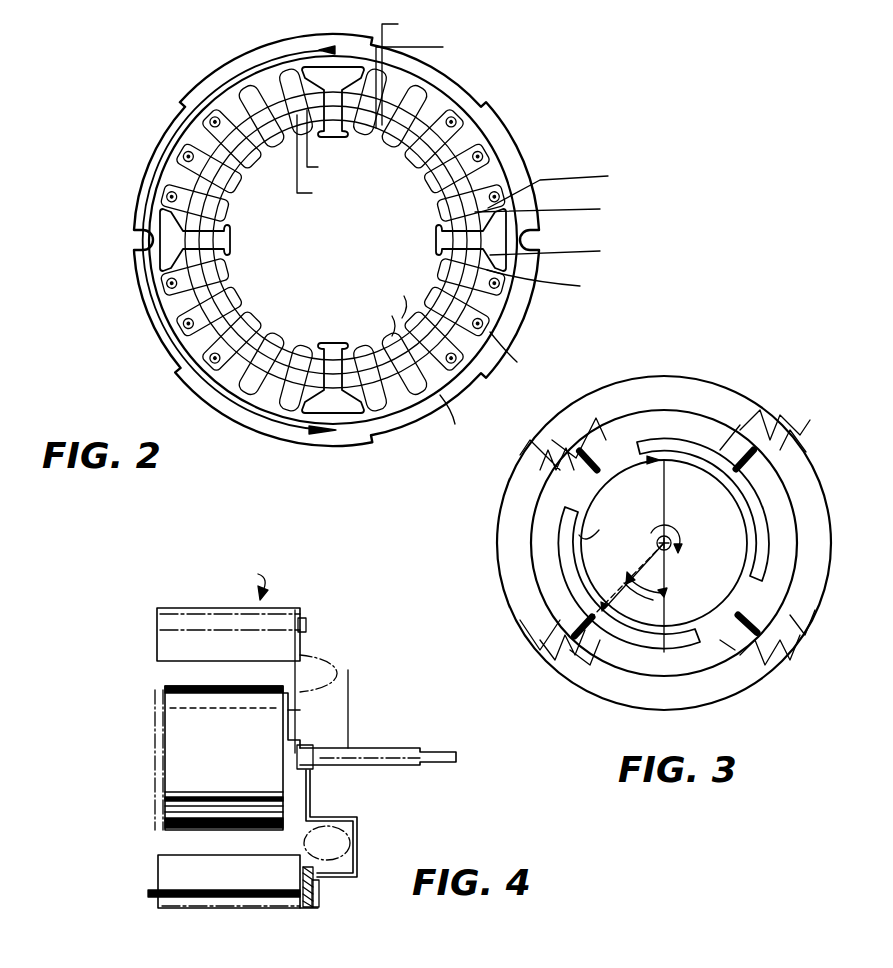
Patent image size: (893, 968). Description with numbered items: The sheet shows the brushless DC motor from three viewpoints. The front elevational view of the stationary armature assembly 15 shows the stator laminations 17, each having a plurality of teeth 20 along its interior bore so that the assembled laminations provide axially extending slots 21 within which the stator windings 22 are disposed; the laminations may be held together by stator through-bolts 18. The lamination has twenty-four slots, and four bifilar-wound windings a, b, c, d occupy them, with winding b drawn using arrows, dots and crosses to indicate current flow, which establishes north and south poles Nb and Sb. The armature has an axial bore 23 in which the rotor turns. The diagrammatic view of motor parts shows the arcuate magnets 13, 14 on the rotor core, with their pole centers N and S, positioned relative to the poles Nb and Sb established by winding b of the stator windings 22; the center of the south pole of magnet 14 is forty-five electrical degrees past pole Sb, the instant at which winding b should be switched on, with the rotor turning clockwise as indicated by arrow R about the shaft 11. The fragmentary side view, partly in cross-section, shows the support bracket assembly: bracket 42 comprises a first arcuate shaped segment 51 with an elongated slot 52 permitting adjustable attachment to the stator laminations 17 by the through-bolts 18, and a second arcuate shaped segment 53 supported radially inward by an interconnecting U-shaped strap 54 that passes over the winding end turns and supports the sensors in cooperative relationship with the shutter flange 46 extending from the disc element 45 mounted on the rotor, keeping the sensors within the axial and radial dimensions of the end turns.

In FIG. 3, the shaft 11 is at (657, 552).
In FIG. 4, the shaft 11 is at (402, 746).
In FIG. 3, the arcuate magnet 13 is at (750, 492).
In FIG. 4, the arcuate magnet 13 is at (177, 773).
In FIG. 3, the arcuate magnet 14 is at (666, 650).
In FIG. 2, the stationary armature assembly 15 is at (412, 454).
In FIG. 2, the stator laminations 17 is at (515, 168).
In FIG. 4, the stator through-bolts 18 is at (307, 622).
In FIG. 2, the teeth 20 is at (450, 125).
In FIG. 2, the slots 21 is at (484, 141).
In FIG. 3, the stator windings 22 is at (560, 432).
In FIG. 4, the stator windings 22 is at (318, 652).
In FIG. 2, the axial bore 23 is at (349, 251).
In FIG. 4, the bracket 42 is at (320, 881).
In FIG. 4, the disc element 45 is at (288, 717).
In FIG. 4, the shutter flange 46 is at (293, 737).
In FIG. 4, the first arcuate shaped segment 51 is at (307, 913).
In FIG. 4, the elongated slot 52 is at (317, 880).
In FIG. 4, the second arcuate shaped segment 53 is at (313, 780).
In FIG. 4, the U-shaped strap 54 is at (360, 843).